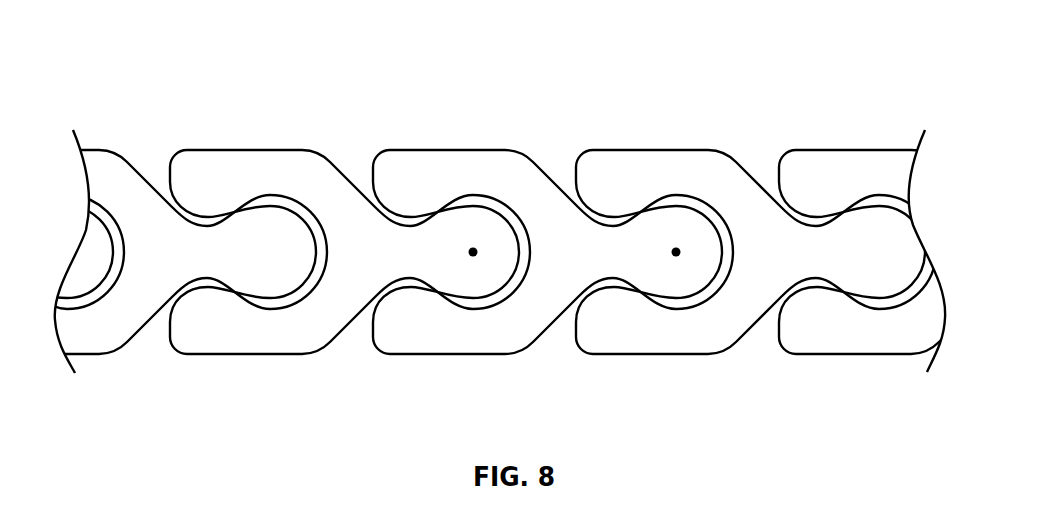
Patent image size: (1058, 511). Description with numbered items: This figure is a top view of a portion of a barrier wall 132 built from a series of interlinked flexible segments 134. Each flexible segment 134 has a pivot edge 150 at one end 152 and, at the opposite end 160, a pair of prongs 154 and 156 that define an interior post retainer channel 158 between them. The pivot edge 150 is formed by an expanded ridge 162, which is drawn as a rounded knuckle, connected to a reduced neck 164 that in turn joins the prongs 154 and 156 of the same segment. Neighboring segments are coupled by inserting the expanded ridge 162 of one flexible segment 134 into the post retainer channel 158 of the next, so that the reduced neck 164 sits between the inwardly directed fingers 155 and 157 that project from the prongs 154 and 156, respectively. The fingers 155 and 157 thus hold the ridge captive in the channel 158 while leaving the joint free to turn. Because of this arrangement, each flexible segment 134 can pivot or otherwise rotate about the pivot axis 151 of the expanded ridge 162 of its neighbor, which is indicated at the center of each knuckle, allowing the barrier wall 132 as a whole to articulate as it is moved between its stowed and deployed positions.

The barrier wall 132 is at (724, 64).
The flexible segment 134 is at (248, 137).
The pivot edge 150 is at (690, 260).
The pivot axis 151 is at (474, 247).
The end 152 is at (702, 225).
The prong 154 is at (402, 340).
The inwardly directed finger 155 is at (615, 300).
The prong 156 is at (397, 143).
The inwardly directed finger 157 is at (397, 207).
The interior post retainer channel 158 is at (399, 294).
The opposite end 160 is at (429, 133).
The expanded ridge 162 is at (707, 258).
The reduced neck 164 is at (622, 235).